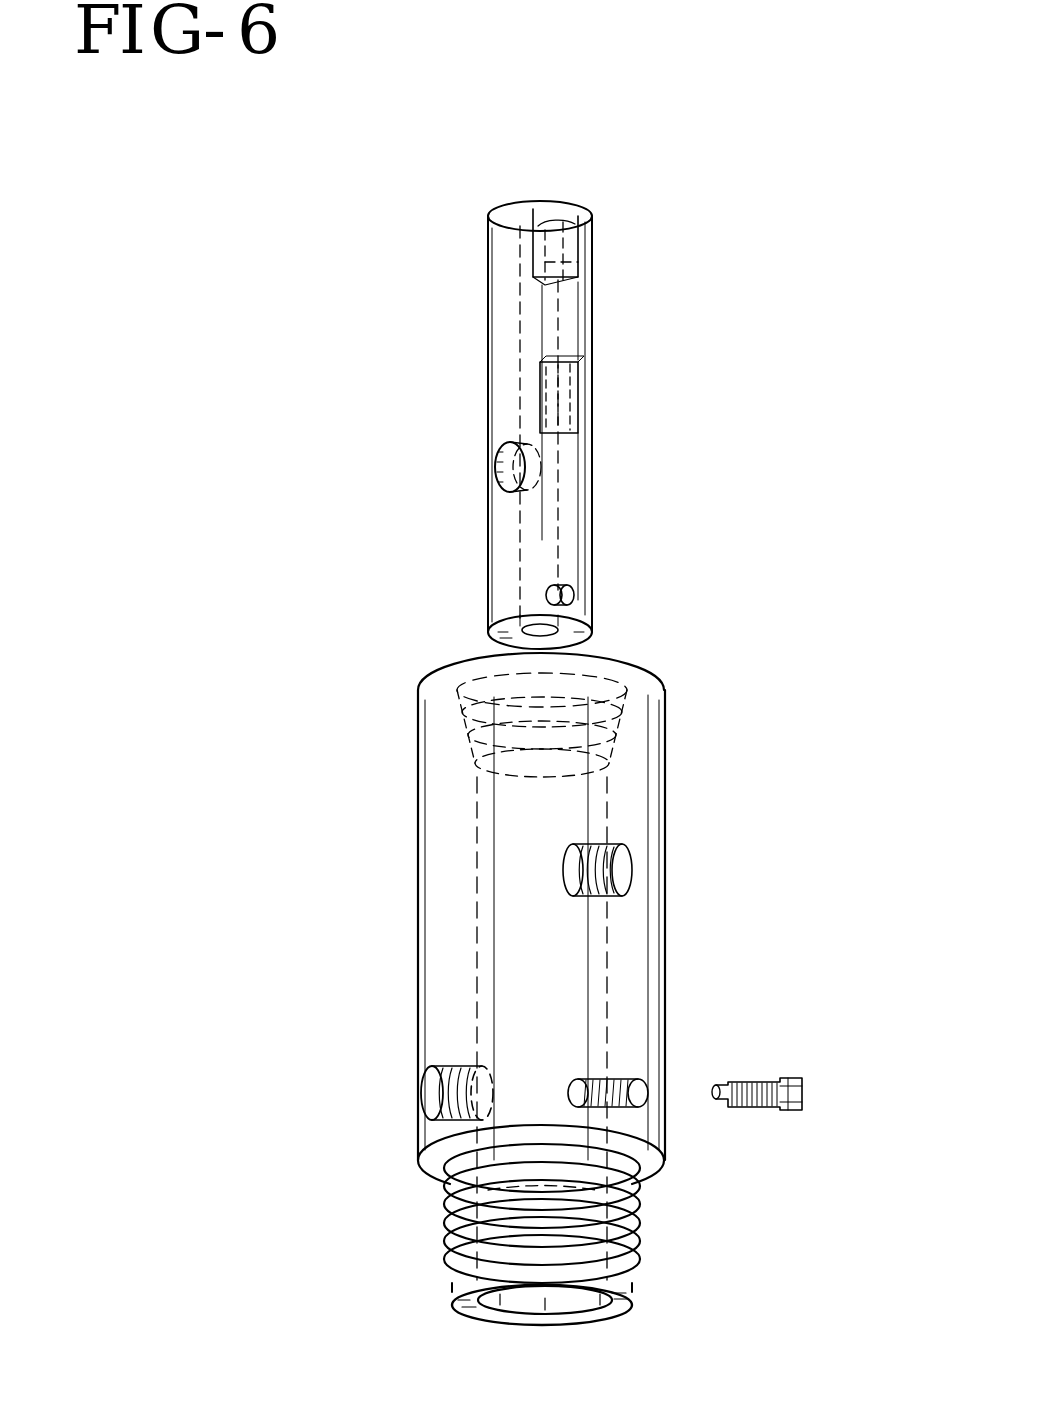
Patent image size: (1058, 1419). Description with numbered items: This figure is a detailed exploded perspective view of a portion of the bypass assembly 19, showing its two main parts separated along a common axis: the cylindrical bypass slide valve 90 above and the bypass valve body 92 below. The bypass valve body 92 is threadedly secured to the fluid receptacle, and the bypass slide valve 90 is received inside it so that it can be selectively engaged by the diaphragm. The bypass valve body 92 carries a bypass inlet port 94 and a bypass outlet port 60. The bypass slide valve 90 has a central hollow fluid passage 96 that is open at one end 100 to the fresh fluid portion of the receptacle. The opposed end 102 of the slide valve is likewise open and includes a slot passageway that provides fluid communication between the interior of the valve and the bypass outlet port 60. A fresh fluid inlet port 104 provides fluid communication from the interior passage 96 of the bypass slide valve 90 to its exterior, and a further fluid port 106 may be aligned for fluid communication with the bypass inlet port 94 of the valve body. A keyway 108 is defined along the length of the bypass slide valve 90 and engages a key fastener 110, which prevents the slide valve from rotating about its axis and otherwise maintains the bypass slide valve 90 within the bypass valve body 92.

The bypass assembly 19 is at (357, 523).
The bypass outlet port 60 is at (640, 866).
The bypass slide valve 90 is at (593, 450).
The bypass valve body 92 is at (667, 733).
The bypass inlet port 94 is at (420, 1089).
The central hollow fluid passage 96 is at (539, 198).
The end 100 is at (593, 630).
The opposed end 102 is at (593, 249).
The fresh fluid inlet port 104 is at (543, 590).
The fluid port 106 is at (490, 462).
The keyway 108 is at (593, 392).
The key fastener 110 is at (803, 1082).